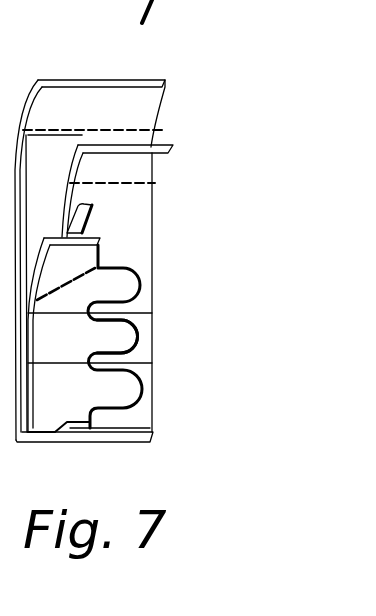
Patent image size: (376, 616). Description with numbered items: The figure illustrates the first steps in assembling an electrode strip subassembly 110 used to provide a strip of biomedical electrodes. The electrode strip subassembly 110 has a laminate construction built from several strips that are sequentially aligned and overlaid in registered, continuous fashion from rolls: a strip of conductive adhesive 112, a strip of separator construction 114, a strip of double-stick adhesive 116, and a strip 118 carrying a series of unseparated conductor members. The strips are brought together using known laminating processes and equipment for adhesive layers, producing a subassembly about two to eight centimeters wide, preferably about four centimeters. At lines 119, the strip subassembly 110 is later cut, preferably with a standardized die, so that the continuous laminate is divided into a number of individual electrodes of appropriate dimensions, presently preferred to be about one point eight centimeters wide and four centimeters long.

The electrode strip subassembly 110 is at (159, 236).
The strip of conductive adhesive 112 is at (142, 118).
The strip of separator construction 114 is at (147, 193).
The strip of double-stick adhesive 116 is at (83, 222).
The strip of unseparated conductor members 118 is at (125, 285).
The lines 119 is at (133, 358).